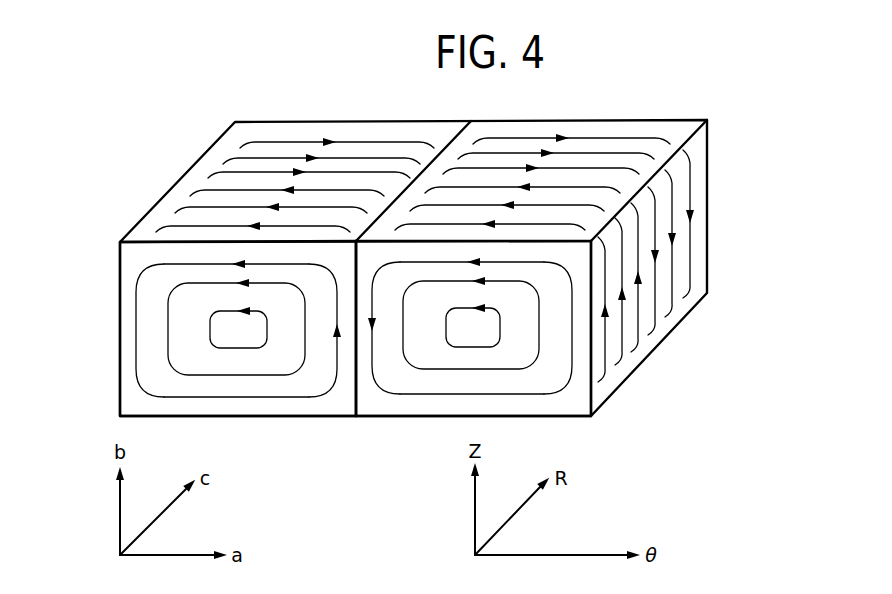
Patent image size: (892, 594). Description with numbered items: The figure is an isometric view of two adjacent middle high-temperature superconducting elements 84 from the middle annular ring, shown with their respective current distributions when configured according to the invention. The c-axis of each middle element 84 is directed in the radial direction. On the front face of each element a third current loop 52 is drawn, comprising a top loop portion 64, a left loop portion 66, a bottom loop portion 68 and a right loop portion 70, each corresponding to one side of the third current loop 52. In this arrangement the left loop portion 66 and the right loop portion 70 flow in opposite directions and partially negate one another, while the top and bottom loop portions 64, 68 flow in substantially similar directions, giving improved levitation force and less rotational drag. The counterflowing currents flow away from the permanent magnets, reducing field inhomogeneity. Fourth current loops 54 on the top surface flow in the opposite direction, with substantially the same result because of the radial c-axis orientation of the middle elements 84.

The third current loop 52 is at (153, 392).
The fourth current loop 54 is at (289, 142).
The top loop portion 64 is at (187, 264).
The left loop portion 66 is at (136, 311).
The bottom loop portion 68 is at (275, 397).
The right loop portion 70 is at (328, 384).
The middle high-temperature superconducting element 84 is at (235, 335).